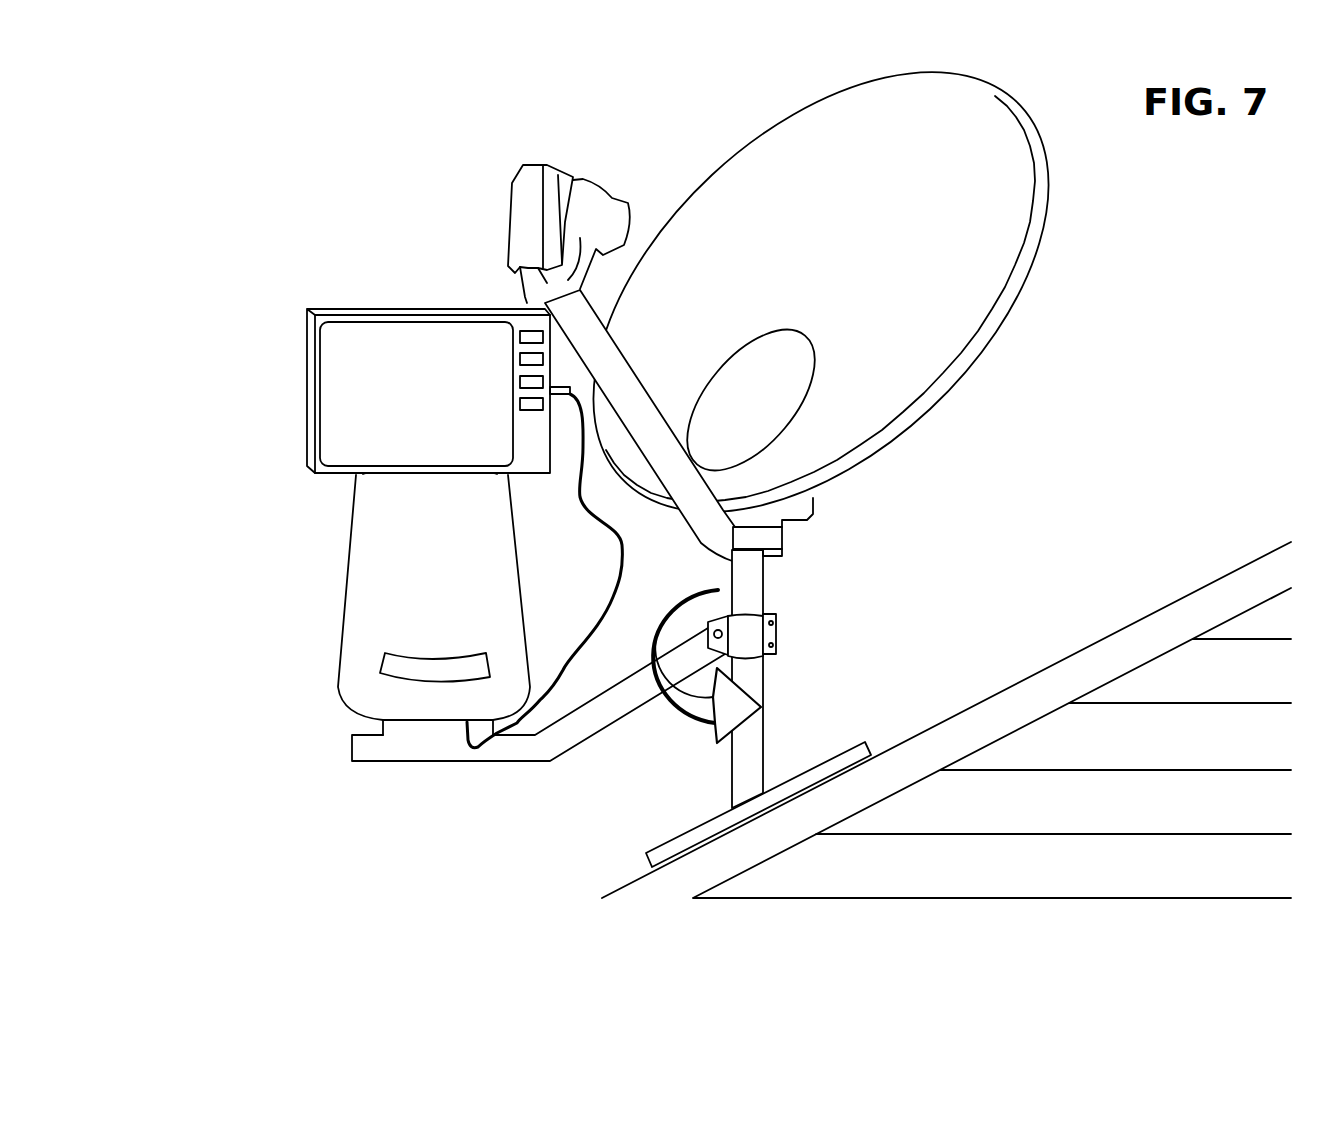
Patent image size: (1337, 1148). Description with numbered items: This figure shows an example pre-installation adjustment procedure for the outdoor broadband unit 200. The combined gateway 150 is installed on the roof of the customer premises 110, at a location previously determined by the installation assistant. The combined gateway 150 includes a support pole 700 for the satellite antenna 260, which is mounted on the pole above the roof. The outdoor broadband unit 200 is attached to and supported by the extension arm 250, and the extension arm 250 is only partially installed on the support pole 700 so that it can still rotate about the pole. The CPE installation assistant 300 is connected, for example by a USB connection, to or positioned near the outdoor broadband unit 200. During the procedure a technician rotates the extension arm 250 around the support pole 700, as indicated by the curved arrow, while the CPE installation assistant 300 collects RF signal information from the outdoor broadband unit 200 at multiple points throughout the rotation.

The customer premises 110 is at (1126, 612).
The combined gateway 150 is at (240, 92).
The outdoor broadband unit 200 is at (325, 580).
The extension arm 250 is at (352, 748).
The satellite antenna 260 is at (948, 406).
The CPE installation assistant 300 is at (307, 378).
The support pole 700 is at (764, 676).